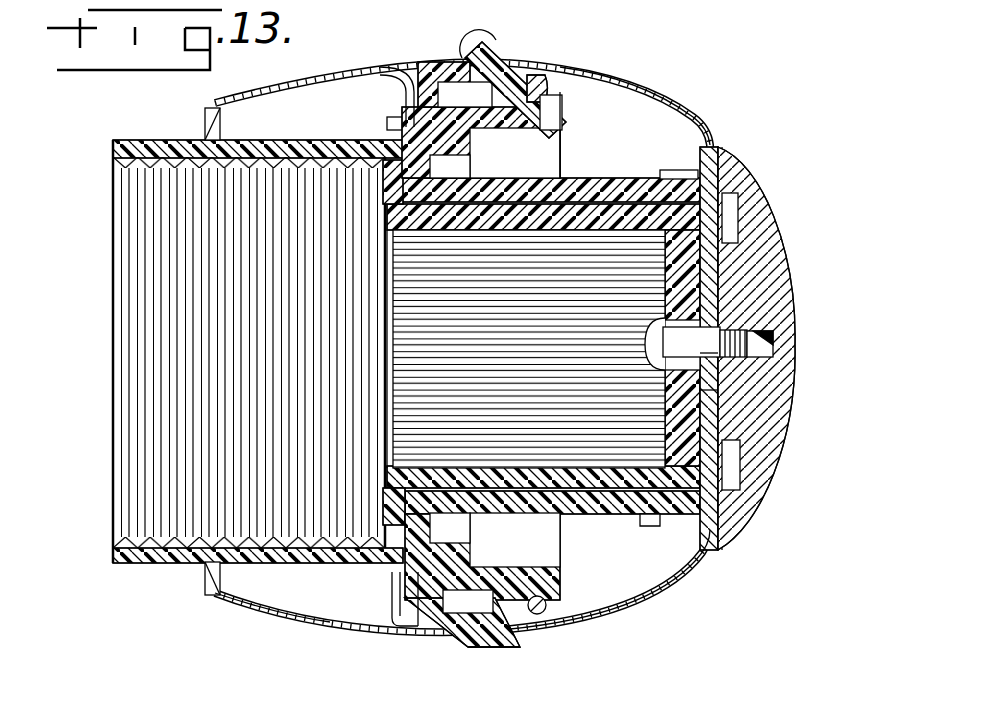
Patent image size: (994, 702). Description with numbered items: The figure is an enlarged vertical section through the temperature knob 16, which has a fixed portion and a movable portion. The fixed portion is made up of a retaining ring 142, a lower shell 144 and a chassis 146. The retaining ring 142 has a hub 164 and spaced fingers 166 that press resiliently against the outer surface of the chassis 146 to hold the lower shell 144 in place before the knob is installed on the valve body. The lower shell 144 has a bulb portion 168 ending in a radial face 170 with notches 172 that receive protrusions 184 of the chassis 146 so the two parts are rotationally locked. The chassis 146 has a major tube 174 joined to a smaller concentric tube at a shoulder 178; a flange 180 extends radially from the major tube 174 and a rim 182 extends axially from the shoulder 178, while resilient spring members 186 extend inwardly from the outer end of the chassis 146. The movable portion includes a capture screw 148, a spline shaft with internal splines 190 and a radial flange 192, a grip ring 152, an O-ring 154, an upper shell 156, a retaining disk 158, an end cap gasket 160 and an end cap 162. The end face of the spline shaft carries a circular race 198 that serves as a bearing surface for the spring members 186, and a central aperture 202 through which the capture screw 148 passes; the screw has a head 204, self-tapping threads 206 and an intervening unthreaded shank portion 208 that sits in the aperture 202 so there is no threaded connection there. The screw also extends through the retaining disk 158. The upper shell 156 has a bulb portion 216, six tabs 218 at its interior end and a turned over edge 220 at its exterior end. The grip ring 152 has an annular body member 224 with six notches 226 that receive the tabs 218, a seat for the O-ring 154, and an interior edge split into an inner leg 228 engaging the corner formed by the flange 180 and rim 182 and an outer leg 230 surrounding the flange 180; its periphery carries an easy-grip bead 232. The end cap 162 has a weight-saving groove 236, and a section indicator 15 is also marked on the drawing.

The section line 15 is at (172, 698).
The temperature knob 16 is at (680, 74).
The retaining ring 142 is at (280, 596).
The lower shell 144 is at (289, 622).
The chassis 146 is at (148, 566).
The capture screw 148 is at (777, 333).
The grip ring 152 is at (493, 657).
The O-ring 154 is at (548, 614).
The upper shell 156 is at (697, 107).
The retaining disk 158 is at (742, 168).
The end cap gasket 160 is at (720, 523).
The end cap 162 is at (770, 245).
The hub 164 is at (206, 597).
The fingers 166 is at (248, 122).
The bulb portion 168 is at (313, 78).
The radial face 170 is at (413, 607).
The notches 172 is at (403, 118).
The major tube 174 is at (112, 557).
The shoulder 178 is at (407, 542).
The flange 180 is at (433, 607).
The rim 182 is at (472, 548).
The protrusions 184 is at (392, 119).
The spring members 186 is at (643, 522).
The internal splines 190 is at (600, 472).
The radial flange 192 is at (833, 683).
The circular race 198 is at (742, 452).
The aperture 202 is at (757, 273).
The head 204 is at (705, 392).
The self-tapping threads 206 is at (732, 302).
The unthreaded shank portion 208 is at (705, 357).
The bulb portion 216 is at (639, 88).
The tabs 218 is at (530, 632).
The turned over edge 220 is at (690, 170).
The annular body member 224 is at (558, 112).
The notches 226 is at (532, 70).
The inner leg 228 is at (468, 118).
The outer leg 230 is at (433, 62).
The bead 232 is at (490, 52).
The groove 236 is at (733, 210).